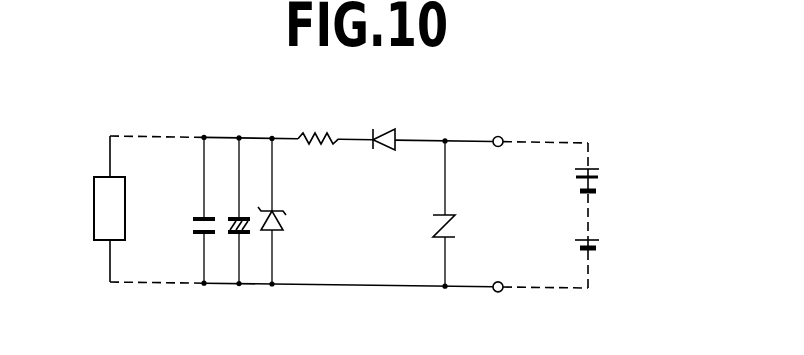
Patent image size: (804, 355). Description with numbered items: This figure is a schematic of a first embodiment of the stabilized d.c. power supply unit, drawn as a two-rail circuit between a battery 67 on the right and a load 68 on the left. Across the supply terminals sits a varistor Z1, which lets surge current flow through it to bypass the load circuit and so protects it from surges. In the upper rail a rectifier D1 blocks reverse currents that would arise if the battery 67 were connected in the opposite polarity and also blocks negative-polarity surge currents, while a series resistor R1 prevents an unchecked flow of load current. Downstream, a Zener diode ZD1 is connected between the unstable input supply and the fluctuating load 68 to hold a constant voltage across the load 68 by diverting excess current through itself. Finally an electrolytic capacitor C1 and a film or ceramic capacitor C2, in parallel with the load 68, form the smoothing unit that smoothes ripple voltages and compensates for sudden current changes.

The load 68 is at (94, 198).
The battery 67 is at (597, 188).
The film or ceramic capacitor C2 is at (197, 218).
The electrolytic capacitor C1 is at (236, 218).
The Zener diode ZD1 is at (281, 227).
The resistor R1 is at (321, 132).
The rectifier D1 is at (393, 129).
The varistor Z1 is at (455, 222).